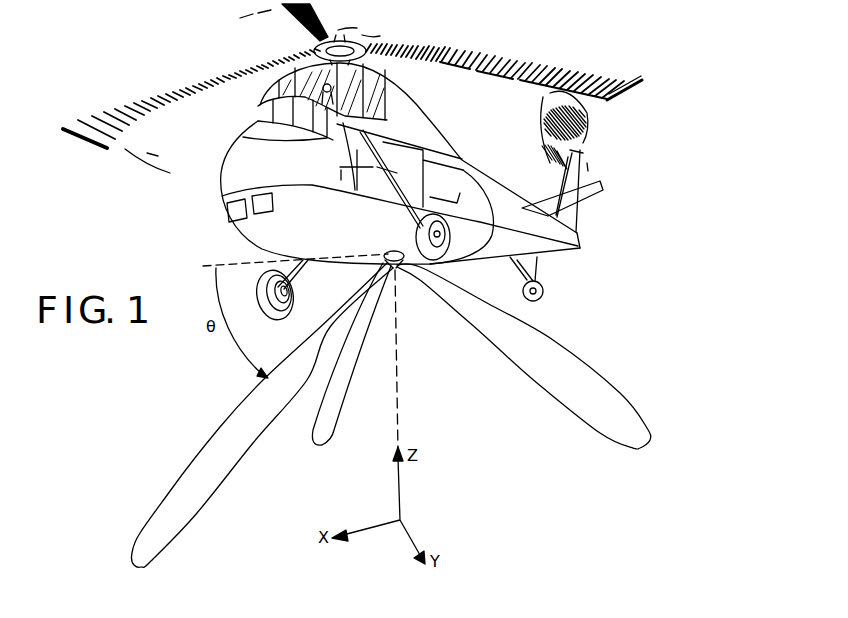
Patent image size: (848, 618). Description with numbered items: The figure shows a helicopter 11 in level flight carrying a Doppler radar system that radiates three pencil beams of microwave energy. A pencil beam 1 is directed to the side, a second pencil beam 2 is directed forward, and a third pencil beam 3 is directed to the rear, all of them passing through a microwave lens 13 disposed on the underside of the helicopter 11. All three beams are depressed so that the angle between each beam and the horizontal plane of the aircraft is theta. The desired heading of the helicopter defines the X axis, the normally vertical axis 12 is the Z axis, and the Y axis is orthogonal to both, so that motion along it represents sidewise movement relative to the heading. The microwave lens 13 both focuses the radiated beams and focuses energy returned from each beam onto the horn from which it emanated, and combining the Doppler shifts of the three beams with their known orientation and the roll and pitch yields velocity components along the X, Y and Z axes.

The helicopter 11 is at (220, 181).
The microwave lens 13 is at (388, 249).
The normally vertical axis 12 is at (397, 368).
The pencil beam 1 is at (330, 432).
The second pencil beam 2 is at (209, 433).
The third pencil beam 3 is at (556, 352).